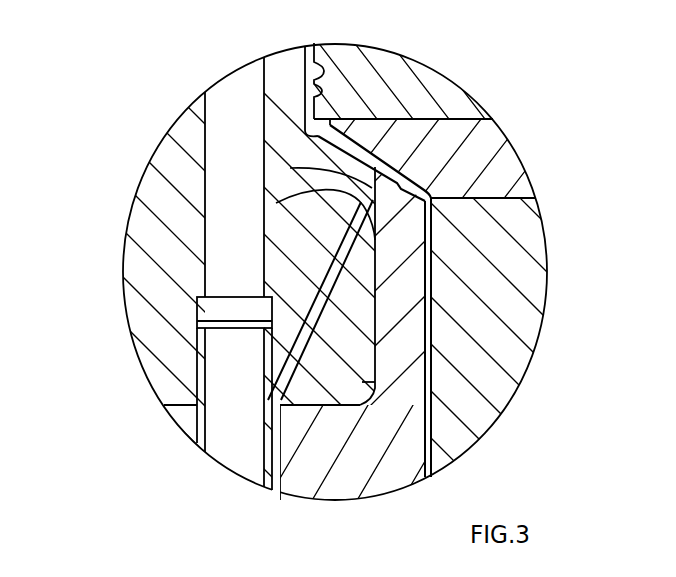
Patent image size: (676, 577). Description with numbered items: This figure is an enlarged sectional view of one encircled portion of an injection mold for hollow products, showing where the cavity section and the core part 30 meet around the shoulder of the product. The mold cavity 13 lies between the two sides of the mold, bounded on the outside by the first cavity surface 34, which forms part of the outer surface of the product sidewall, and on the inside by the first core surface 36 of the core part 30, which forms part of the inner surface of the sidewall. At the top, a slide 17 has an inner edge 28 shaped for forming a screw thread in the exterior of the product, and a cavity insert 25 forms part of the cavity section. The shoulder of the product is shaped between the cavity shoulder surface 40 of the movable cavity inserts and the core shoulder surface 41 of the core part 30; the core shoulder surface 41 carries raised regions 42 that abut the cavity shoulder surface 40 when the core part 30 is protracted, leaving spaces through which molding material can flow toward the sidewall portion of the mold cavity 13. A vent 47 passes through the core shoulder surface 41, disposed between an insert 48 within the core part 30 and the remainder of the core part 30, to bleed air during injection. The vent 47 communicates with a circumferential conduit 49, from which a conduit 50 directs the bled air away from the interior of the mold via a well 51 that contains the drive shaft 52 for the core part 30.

The mold cavity 13 is at (467, 193).
The slide 17 is at (407, 58).
The cavity insert 25 is at (540, 222).
The inner edge of slide 28 is at (265, 53).
The core part 30 is at (390, 495).
The first cavity surface 34 is at (431, 262).
The first core surface 36 is at (421, 310).
The cavity shoulder surface 40 is at (423, 120).
The core shoulder surface 41 is at (323, 140).
The raised regions 42 is at (358, 157).
The vent 47 is at (330, 167).
The insert 48 is at (362, 392).
The circumferential conduit 49 is at (345, 200).
The conduit 50 is at (320, 343).
The well 51 is at (275, 487).
The drive shaft 52 is at (227, 462).